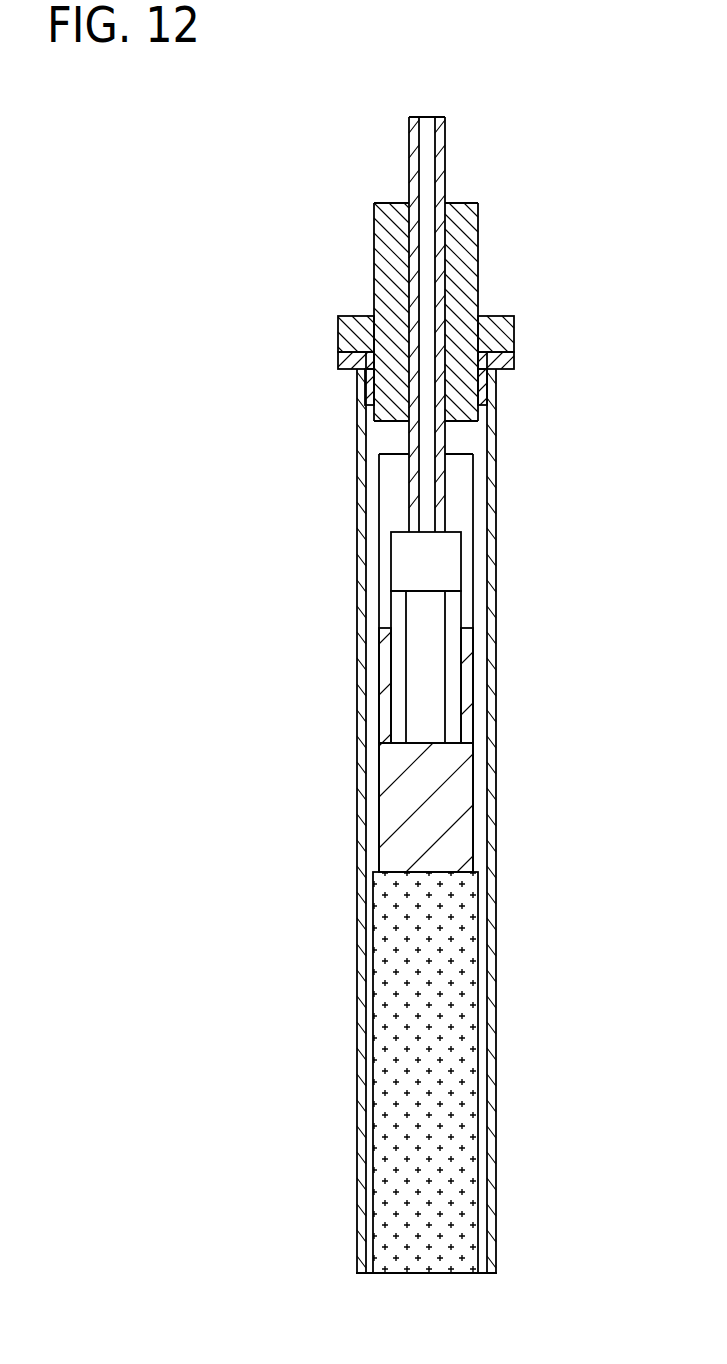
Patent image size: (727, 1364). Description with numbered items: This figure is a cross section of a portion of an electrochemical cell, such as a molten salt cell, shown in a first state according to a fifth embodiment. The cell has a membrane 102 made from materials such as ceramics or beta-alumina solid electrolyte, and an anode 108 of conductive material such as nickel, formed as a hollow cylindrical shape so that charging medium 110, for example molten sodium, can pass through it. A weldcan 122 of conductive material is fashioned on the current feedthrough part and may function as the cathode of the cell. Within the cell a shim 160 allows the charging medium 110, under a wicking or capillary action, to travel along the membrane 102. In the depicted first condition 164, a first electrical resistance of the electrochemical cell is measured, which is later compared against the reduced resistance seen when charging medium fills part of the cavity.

The membrane 102 is at (496, 595).
The anode 108 is at (437, 429).
The charging medium 110 is at (452, 941).
The weldcan 122 is at (478, 218).
The shim 160 is at (441, 806).
The first condition 164 is at (424, 680).